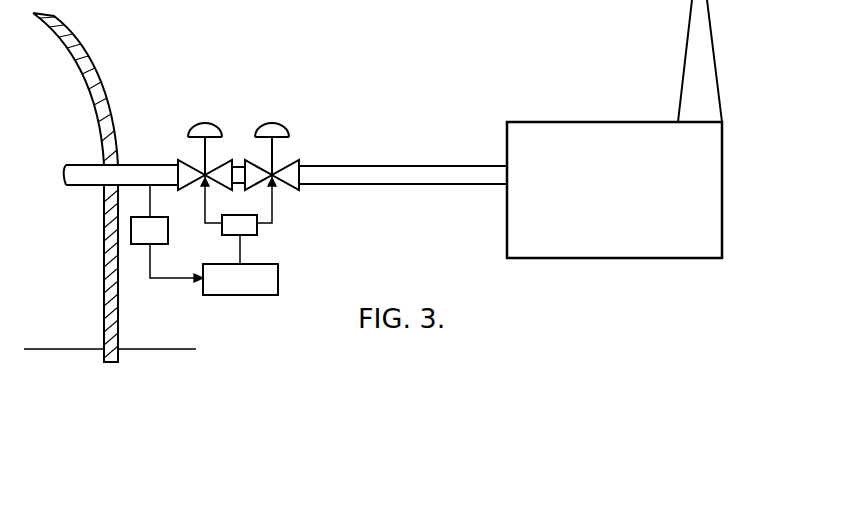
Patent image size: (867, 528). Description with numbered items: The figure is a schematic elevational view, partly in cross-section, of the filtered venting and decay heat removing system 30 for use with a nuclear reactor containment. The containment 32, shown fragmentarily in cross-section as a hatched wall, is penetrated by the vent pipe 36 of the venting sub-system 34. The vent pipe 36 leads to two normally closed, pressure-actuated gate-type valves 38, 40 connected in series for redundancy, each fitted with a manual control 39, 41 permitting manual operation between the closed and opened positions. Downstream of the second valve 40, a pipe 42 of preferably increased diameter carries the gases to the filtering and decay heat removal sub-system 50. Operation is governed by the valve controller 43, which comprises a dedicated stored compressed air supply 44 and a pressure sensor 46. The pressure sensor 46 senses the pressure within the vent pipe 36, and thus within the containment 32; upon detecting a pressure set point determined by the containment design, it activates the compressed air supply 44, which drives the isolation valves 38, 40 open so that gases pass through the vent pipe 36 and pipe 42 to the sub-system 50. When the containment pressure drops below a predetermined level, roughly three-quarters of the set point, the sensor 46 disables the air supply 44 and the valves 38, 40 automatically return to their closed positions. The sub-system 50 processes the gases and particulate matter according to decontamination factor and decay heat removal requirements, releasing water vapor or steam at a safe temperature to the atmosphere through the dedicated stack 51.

The filtered venting and decay heat removing system 30 is at (391, 118).
The containment 32 is at (96, 62).
The venting sub-system 34 is at (295, 132).
The vent pipe 36 is at (145, 165).
The pressure-actuated valve 38 is at (180, 160).
The manual control 39 is at (203, 123).
The pressure-actuated valve 40 is at (298, 162).
The manual control 41 is at (272, 123).
The pipe 42 is at (412, 186).
The valve controller 43 is at (240, 265).
The compressed air supply 44 is at (258, 233).
The pressure sensor 46 is at (167, 233).
The filtering and decay heat removal sub-system 50 is at (623, 198).
The stack 51 is at (717, 42).